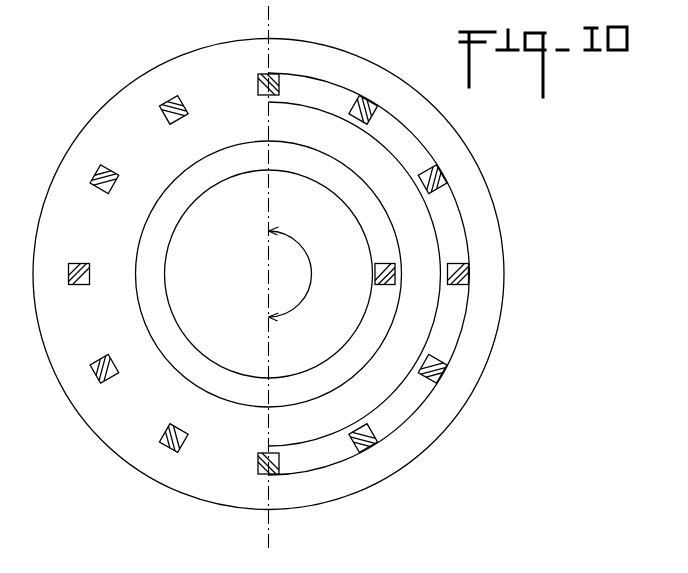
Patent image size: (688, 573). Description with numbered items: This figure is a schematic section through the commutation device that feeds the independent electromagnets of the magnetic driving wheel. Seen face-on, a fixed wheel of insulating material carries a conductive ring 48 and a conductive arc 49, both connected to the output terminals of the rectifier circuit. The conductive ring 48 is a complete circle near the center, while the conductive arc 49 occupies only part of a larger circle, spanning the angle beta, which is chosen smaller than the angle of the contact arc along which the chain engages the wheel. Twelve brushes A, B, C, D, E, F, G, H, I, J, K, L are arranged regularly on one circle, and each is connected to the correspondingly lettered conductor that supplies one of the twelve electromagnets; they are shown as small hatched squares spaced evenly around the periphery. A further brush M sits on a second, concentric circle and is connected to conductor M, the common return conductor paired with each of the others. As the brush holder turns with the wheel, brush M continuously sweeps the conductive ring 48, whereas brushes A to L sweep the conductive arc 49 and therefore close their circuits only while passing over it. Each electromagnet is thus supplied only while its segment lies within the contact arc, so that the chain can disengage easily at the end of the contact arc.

The conductive ring 48 is at (194, 369).
The conductive arc 49 is at (330, 455).
The brush M is at (376, 276).
The brush A is at (272, 77).
The brush B is at (363, 101).
The brush C is at (441, 170).
The brush D is at (467, 274).
The brush E is at (443, 373).
The brush F is at (368, 449).
The brush G is at (276, 478).
The brush H is at (168, 452).
The brush I is at (98, 375).
The brush J is at (68, 274).
The brush K is at (94, 179).
The brush L is at (170, 100).